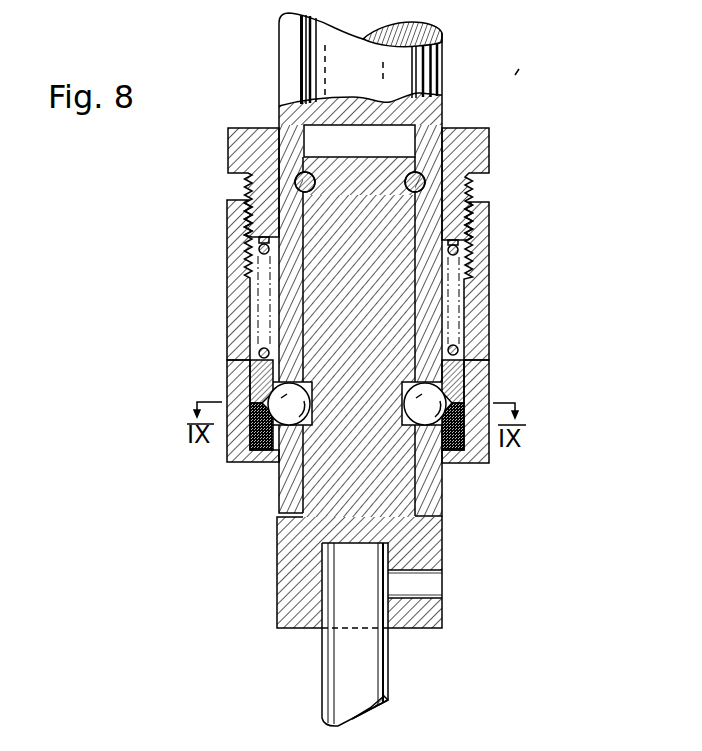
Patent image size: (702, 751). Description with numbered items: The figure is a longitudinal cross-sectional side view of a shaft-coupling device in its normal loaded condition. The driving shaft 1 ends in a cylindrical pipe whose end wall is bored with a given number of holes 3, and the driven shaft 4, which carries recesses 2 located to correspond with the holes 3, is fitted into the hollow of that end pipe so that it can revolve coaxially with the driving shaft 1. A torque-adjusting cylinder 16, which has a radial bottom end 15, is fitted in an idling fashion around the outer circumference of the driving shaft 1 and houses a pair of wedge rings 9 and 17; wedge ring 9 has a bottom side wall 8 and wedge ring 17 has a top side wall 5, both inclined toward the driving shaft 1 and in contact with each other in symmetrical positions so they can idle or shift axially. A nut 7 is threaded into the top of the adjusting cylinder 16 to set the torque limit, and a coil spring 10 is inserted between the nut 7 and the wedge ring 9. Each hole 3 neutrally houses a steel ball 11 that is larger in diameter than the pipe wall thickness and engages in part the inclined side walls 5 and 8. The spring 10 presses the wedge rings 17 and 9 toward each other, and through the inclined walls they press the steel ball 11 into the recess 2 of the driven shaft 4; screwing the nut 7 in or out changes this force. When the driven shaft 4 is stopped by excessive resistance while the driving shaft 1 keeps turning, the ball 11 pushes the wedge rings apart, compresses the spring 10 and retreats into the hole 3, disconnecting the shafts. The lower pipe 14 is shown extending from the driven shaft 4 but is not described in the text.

The driving shaft 1 is at (415, 64).
The recess 2 is at (274, 460).
The hole 3 is at (300, 427).
The driven shaft 4 is at (425, 556).
The top side wall 5 is at (485, 455).
The nut 7 is at (478, 130).
The bottom side wall 8 is at (462, 395).
The wedge ring 9 is at (462, 377).
The coil spring 10 is at (455, 267).
The steel ball 11 is at (282, 403).
The pipe 14 is at (372, 678).
The radial bottom end 15 is at (438, 458).
The torque-adjusting cylinder 16 is at (477, 277).
The wedge ring 17 is at (446, 417).